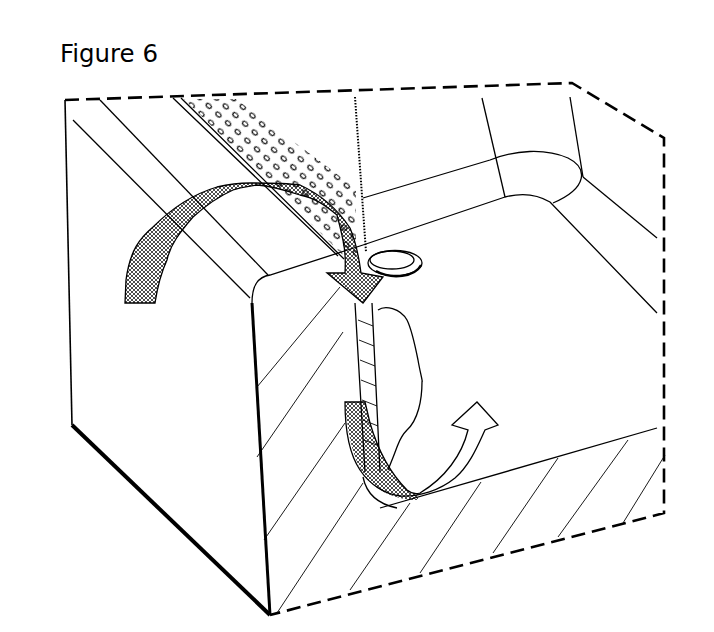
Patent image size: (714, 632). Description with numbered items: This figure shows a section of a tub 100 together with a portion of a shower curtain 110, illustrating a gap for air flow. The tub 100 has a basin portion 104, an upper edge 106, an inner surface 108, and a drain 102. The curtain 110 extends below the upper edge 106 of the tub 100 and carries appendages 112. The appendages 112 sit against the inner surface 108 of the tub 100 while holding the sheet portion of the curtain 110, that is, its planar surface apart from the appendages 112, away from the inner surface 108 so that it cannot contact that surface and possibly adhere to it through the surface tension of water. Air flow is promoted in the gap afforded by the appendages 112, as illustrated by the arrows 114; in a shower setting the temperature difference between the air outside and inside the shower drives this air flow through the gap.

The tub 100 is at (197, 372).
The drain 102 is at (400, 278).
The basin portion 104 is at (533, 177).
The upper edge 106 is at (275, 234).
The inner surface 108 is at (392, 371).
The curtain 110 is at (334, 139).
The appendages 112 is at (273, 130).
The arrows 114 is at (392, 371).